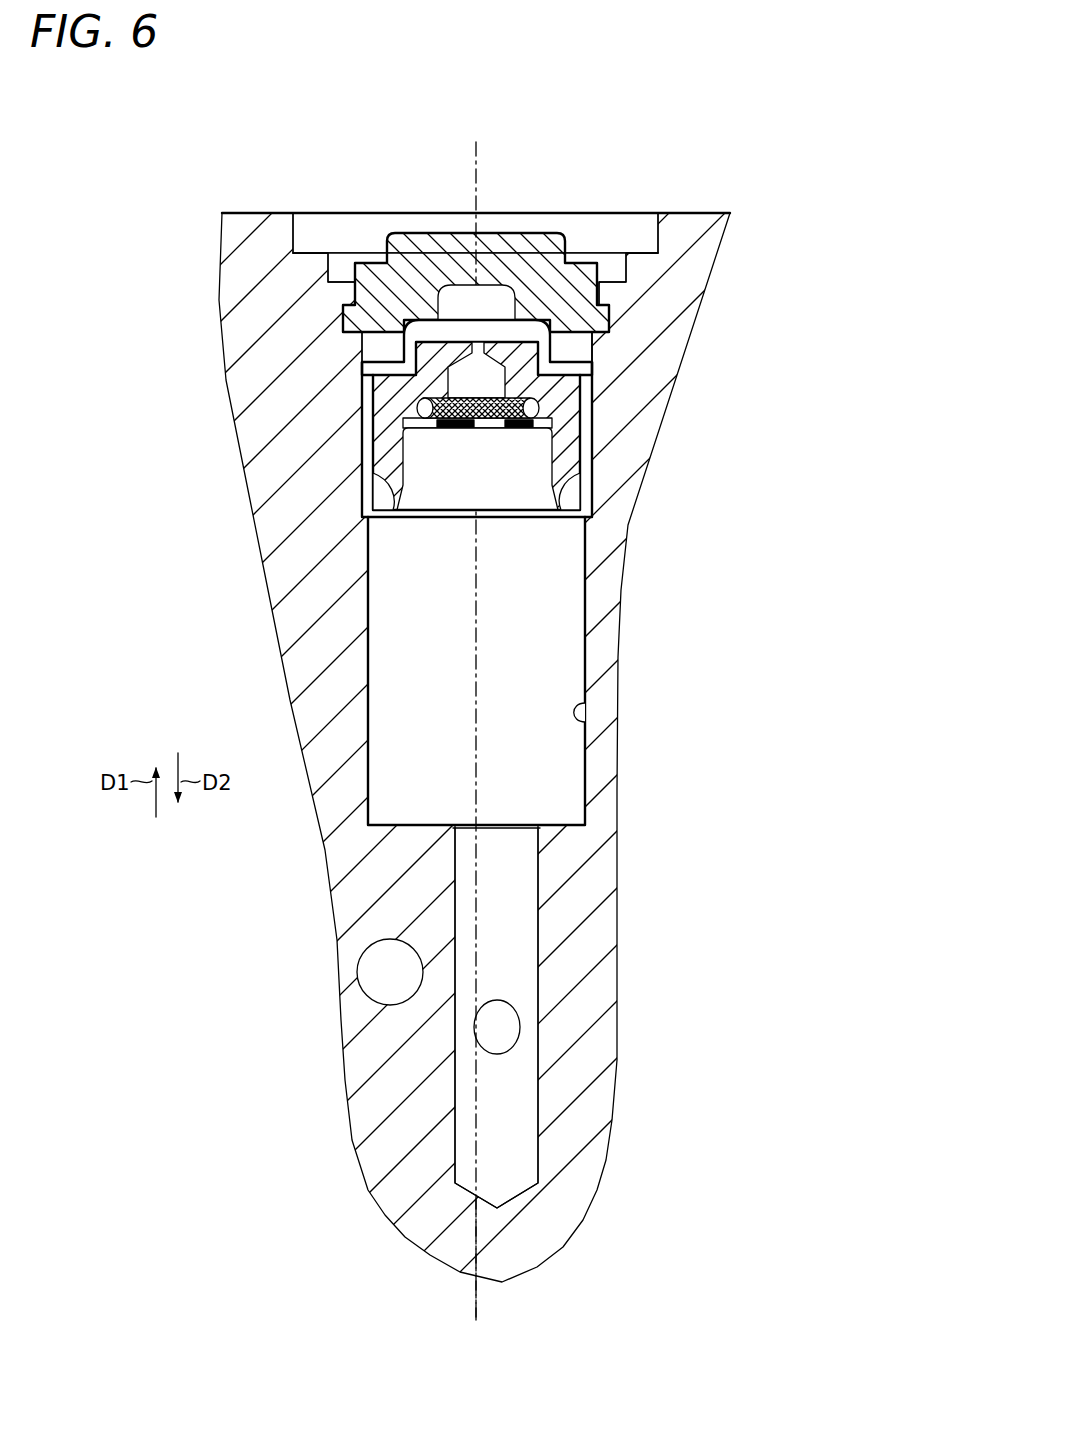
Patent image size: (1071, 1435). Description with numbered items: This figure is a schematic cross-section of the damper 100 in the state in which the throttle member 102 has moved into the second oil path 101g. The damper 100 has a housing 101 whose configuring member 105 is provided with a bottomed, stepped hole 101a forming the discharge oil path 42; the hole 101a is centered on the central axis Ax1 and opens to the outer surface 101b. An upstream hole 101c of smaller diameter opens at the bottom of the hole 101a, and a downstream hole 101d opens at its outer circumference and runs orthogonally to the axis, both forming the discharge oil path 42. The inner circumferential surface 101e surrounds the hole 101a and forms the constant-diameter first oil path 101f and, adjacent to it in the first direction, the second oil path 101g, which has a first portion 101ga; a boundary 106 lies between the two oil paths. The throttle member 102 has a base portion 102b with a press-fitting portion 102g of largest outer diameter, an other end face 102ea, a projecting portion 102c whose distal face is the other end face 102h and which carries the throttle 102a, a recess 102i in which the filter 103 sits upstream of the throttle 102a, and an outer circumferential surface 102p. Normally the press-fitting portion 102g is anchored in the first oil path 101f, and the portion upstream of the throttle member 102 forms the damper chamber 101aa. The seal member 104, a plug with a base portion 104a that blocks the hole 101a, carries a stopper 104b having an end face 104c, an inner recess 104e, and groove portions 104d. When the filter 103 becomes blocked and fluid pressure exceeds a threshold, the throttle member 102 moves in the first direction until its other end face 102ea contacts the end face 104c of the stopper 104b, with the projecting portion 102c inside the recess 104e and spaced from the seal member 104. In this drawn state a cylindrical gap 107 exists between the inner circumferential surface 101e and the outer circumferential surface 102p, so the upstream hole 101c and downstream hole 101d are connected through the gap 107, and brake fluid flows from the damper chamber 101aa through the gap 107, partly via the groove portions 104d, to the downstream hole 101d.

The damper 100 is at (497, 338).
The housing 101 is at (495, 717).
The configuring member 105 is at (712, 266).
The hole 101a is at (636, 671).
The damper chamber 101aa is at (636, 671).
The discharge oil path 42 is at (568, 771).
The outer surface 101b is at (254, 212).
The upstream hole 101c is at (523, 930).
The downstream hole 101d is at (362, 420).
The inner circumferential surface 101e is at (583, 706).
The first oil path 101f is at (545, 650).
The second oil path 101g is at (770, 425).
The first portion 101ga is at (592, 425).
The throttle member 102 is at (472, 424).
The throttle 102a is at (416, 407).
The base portion 102b is at (592, 540).
The projecting portion 102c is at (304, 335).
The other end face 102h is at (372, 346).
The other end face 102ea is at (590, 355).
The press-fitting portion 102g is at (733, 500).
The outer circumferential surface 102p is at (587, 502).
The recess 102i is at (362, 485).
The filter 103 is at (375, 459).
The seal member 104 is at (584, 268).
The base portion 104a is at (584, 268).
The stopper 104b is at (593, 352).
The end face 104c is at (590, 408).
The groove portion 104d is at (586, 368).
The recess 104e is at (500, 330).
The boundary 106 is at (582, 545).
The gap 107 is at (378, 478).
The central axis Ax1 is at (480, 1312).